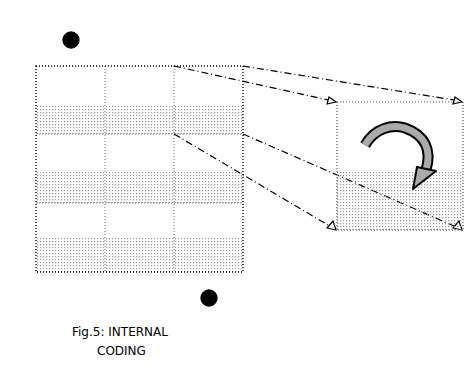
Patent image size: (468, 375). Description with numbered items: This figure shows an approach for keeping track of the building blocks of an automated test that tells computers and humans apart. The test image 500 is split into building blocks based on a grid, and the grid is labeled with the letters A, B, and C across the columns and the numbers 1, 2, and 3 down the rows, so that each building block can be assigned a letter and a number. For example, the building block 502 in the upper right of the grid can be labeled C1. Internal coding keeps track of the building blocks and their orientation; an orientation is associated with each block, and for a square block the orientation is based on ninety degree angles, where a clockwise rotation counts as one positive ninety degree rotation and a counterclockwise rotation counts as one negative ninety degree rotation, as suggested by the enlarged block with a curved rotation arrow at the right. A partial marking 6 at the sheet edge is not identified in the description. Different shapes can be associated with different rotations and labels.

The test image 500 is at (140, 26).
The building block 502 is at (189, 103).
The grid row label 1 is at (130, 100).
The grid row label 2 is at (130, 168).
The grid row label 3 is at (130, 237).
The enlarged cell with rotation arrow 6 is at (416, 134).